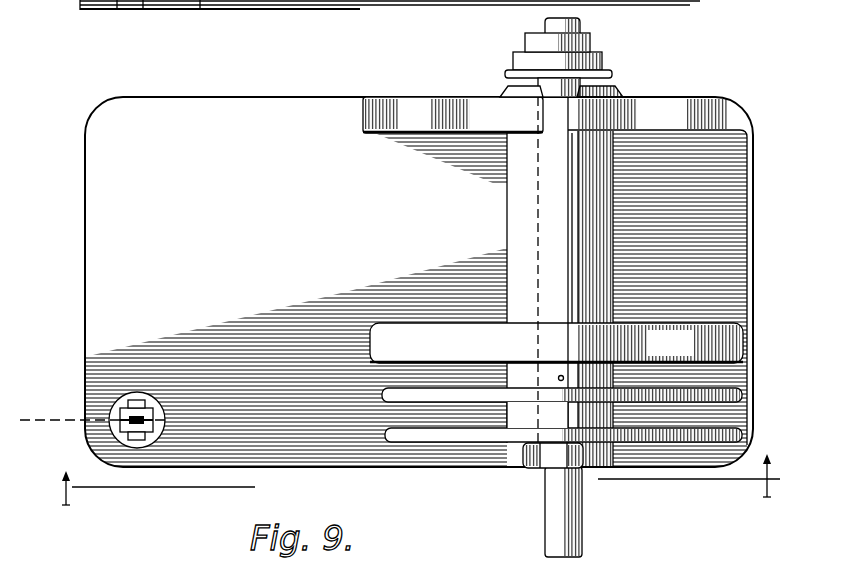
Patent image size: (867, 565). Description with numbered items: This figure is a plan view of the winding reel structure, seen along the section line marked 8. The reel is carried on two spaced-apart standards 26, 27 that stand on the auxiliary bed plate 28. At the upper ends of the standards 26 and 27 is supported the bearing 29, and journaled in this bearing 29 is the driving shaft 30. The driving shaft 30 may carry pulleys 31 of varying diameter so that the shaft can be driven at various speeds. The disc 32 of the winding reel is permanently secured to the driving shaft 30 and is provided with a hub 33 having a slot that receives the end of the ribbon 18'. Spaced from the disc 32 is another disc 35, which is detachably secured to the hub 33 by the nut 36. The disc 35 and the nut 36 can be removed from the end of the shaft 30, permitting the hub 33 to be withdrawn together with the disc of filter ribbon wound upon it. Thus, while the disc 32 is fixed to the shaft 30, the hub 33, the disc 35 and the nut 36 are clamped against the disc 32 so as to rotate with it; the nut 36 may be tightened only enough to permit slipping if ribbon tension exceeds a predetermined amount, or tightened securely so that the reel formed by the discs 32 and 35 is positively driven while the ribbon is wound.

The standard 26 is at (666, 105).
The standard 27 is at (556, 298).
The auxiliary bed plate 28 is at (296, 300).
The bearing 29 is at (539, 282).
The driving shaft 30 is at (582, 32).
The pulleys 31 is at (592, 50).
The disc 32 is at (742, 394).
The hub 33 is at (538, 415).
The disc 35 is at (743, 432).
The nut 36 is at (553, 455).
The ribbon 18' is at (92, 415).
The section line 8- 8 is at (413, 479).